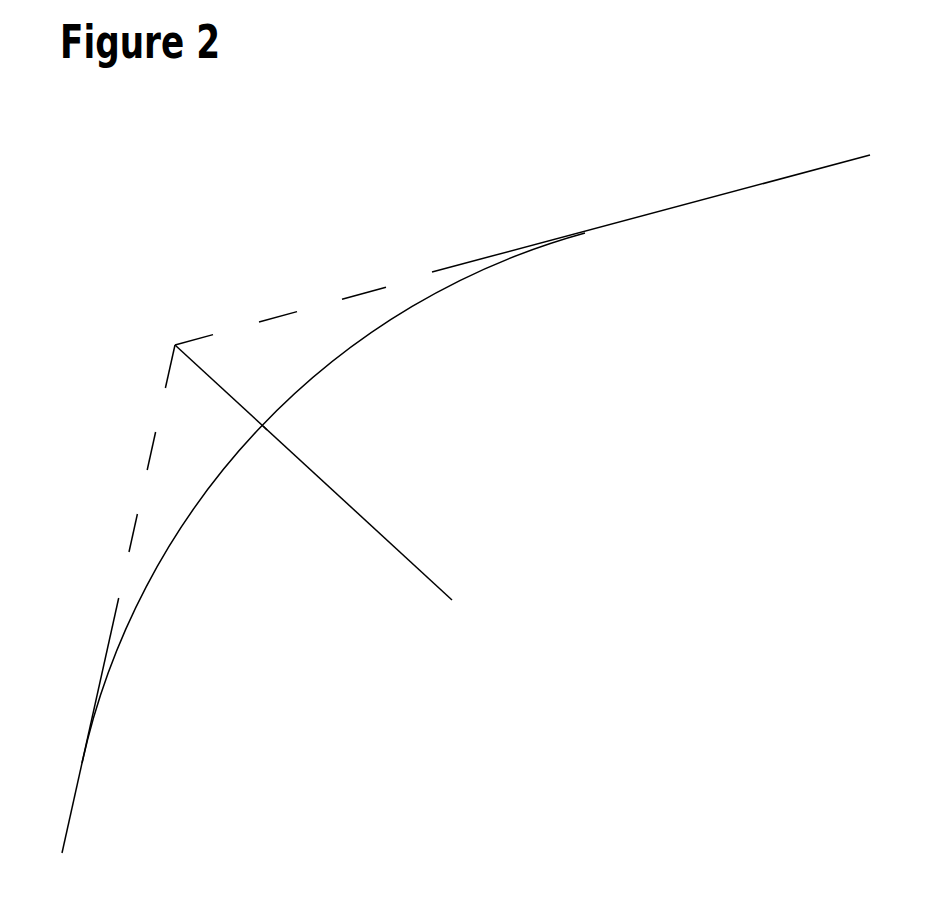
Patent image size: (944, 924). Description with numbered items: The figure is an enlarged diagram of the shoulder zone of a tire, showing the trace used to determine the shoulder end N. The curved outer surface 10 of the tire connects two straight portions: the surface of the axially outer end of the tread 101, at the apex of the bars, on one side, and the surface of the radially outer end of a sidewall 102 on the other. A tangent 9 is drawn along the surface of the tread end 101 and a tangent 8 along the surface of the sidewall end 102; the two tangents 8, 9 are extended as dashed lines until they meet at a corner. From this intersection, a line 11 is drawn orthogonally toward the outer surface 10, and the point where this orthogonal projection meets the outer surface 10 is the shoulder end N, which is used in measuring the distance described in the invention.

The tangent 8 is at (133, 535).
The tangent 9 is at (273, 315).
The outer surface 10 is at (320, 377).
The orthogonal projection line 11 is at (405, 557).
The axially outer end of the tread 101 is at (710, 197).
The radially outer end of a sidewall 102 is at (68, 833).
The shoulder end N is at (265, 428).